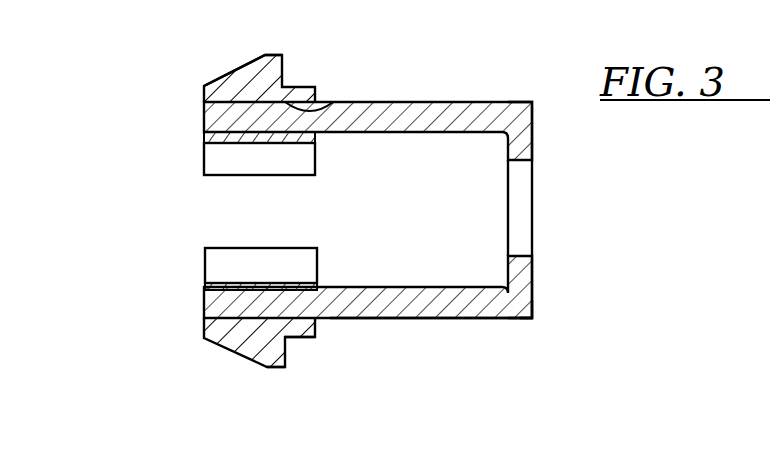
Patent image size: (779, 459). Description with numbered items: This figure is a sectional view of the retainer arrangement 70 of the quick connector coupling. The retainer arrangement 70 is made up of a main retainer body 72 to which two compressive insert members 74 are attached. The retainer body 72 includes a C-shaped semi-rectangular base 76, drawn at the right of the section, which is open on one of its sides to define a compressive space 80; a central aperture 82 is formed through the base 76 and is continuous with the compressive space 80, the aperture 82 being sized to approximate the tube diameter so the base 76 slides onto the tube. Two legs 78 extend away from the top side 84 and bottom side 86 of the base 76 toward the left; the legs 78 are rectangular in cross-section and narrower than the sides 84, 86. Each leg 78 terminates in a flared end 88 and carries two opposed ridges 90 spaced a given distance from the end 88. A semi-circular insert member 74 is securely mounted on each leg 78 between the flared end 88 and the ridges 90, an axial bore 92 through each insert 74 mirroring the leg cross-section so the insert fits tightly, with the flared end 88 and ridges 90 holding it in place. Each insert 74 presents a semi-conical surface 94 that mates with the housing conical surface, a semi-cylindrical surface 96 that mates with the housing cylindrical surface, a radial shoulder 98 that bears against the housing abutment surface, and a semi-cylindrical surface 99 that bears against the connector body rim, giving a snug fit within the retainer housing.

The retainer arrangement 70 is at (429, 235).
The main retainer body 72 is at (460, 319).
The compressive insert member 74 is at (248, 82).
The base 76 is at (533, 293).
The leg 78 is at (418, 120).
The compressive space 80 is at (522, 198).
The central aperture 82 is at (522, 173).
The top side 84 is at (500, 101).
The bottom side 86 is at (515, 318).
The flared end 88 is at (264, 197).
The ridge 90 is at (315, 137).
The axial bore 92 is at (317, 109).
The semi-conical surface 94 is at (218, 80).
The semi-cylindrical surface 96 is at (273, 53).
The radial shoulder 98 is at (288, 362).
The semi-cylindrical surface 99 is at (300, 338).